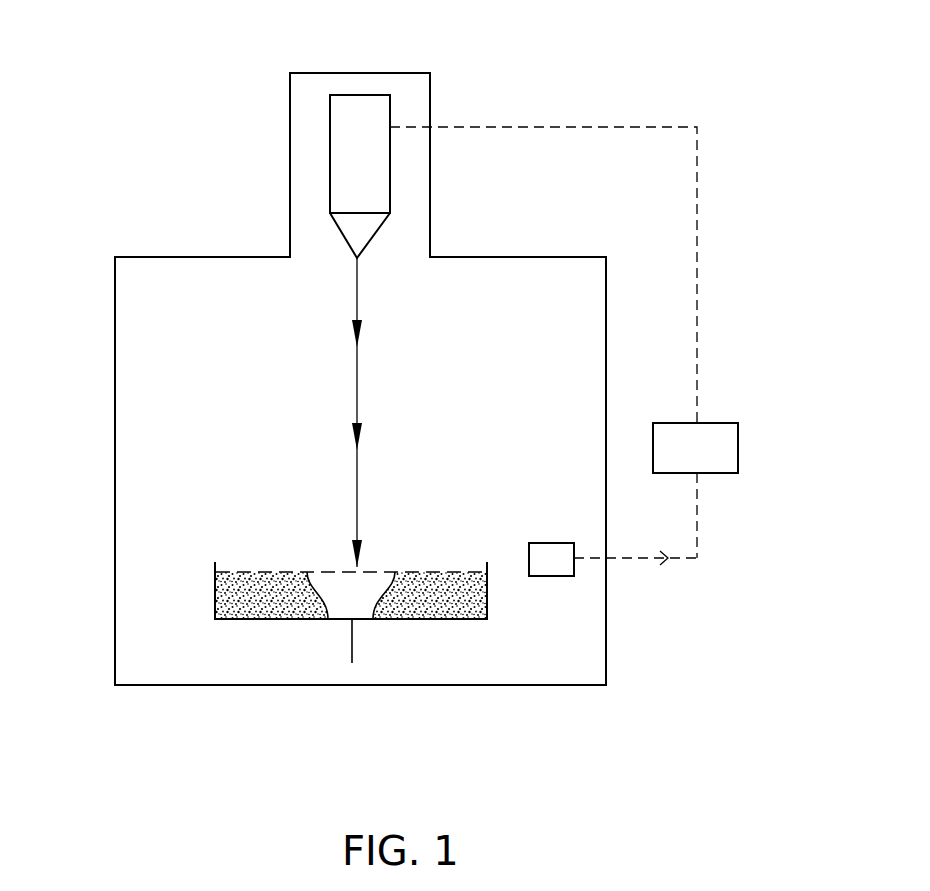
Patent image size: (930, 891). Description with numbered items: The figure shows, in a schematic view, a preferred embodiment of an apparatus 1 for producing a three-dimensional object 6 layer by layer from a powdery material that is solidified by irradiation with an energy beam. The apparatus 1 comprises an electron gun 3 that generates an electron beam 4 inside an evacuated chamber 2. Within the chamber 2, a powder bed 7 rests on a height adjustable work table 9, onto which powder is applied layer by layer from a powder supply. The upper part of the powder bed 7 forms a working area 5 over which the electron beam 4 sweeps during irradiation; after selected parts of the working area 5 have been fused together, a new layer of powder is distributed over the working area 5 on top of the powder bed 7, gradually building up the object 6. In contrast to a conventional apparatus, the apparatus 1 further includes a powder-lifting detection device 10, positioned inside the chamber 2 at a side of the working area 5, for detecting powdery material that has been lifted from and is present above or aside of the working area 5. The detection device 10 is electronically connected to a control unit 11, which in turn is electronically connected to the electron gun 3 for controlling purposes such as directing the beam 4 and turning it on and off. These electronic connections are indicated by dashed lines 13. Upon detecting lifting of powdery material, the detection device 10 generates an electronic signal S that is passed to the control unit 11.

The apparatus 1 is at (200, 89).
The chamber 2 is at (172, 355).
The electron gun 3 is at (352, 117).
The electron beam 4 is at (355, 483).
The working area 5 is at (322, 570).
The three-dimensional object 6 is at (340, 605).
The powder bed 7 is at (240, 597).
The work table 9 is at (443, 620).
The powder-lifting detection device 10 is at (558, 563).
The control unit 11 is at (707, 455).
The dashed lines 13 is at (697, 293).
The electronic signal S is at (669, 562).